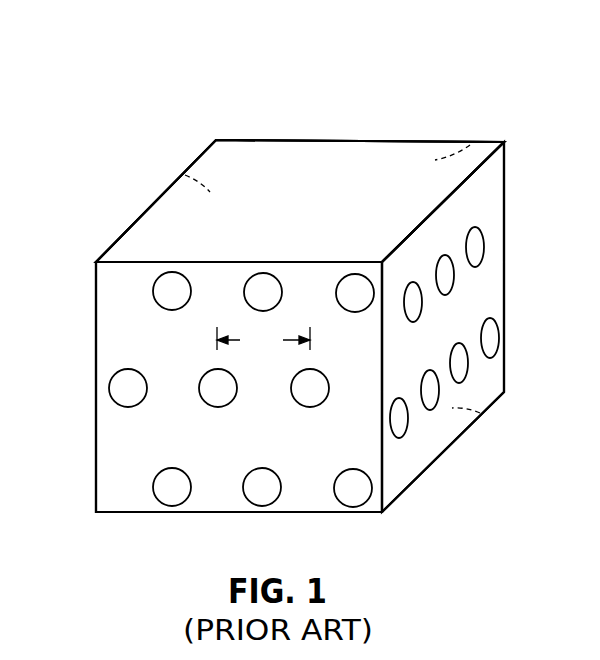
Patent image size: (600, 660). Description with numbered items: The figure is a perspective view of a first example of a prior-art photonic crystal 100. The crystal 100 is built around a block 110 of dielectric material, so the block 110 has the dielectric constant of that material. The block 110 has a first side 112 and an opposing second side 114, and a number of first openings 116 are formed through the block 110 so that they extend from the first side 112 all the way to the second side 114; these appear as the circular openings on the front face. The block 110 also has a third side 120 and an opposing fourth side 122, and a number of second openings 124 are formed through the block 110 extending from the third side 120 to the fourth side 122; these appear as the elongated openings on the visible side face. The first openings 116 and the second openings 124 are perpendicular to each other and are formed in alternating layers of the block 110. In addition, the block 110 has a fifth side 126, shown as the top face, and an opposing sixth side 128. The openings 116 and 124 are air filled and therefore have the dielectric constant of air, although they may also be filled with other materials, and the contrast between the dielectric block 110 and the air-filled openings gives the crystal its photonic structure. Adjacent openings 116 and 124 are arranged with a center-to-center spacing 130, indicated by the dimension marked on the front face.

The photonic crystal 100 is at (102, 148).
The block 110 is at (413, 82).
The first side 112 is at (96, 325).
The second side 114 is at (470, 145).
The first openings 116 is at (250, 478).
The third side 120 is at (493, 178).
The fourth side 122 is at (185, 175).
The second openings 124 is at (477, 248).
The fifth side 126 is at (297, 155).
The sixth side 128 is at (480, 413).
The center-to-center spacing 130 is at (263, 339).